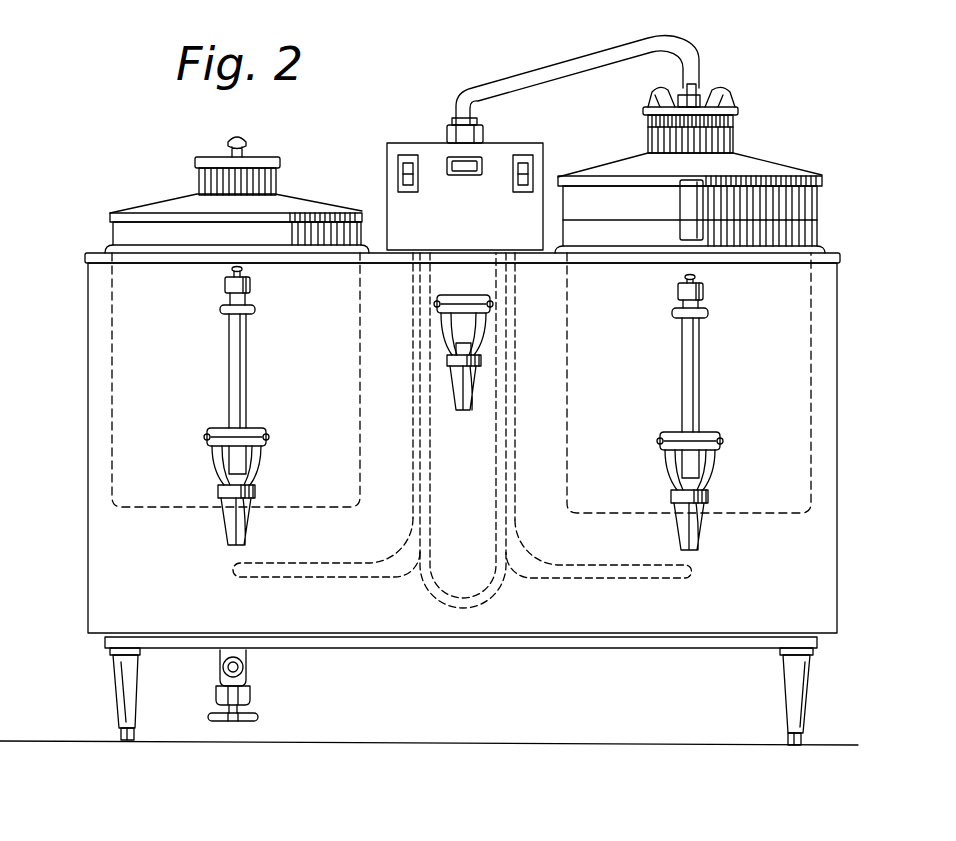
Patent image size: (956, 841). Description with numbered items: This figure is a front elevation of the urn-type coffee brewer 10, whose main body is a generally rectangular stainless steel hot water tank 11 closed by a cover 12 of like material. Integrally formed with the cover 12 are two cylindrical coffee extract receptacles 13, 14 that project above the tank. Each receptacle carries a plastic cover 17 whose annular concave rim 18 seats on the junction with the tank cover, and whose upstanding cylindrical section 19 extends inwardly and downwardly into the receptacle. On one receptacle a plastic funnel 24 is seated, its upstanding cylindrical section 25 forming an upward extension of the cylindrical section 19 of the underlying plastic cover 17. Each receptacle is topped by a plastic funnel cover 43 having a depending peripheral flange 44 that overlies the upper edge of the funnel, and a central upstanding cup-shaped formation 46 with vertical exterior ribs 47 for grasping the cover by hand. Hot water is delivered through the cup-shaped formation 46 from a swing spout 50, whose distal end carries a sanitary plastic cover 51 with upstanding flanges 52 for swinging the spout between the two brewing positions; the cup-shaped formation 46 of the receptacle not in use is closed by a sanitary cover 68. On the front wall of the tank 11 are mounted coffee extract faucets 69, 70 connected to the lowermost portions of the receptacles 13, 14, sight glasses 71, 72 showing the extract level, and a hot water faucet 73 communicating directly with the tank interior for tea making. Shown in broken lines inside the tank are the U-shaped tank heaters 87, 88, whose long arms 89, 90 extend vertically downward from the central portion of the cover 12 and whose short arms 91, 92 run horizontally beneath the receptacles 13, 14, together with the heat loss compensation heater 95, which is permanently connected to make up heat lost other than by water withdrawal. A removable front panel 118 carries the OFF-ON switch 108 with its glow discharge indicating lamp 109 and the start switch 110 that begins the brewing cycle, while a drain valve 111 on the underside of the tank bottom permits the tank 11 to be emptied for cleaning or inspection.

The urn-type coffee brewer 10 is at (118, 168).
The hot water tank 11 is at (838, 557).
The cover 12 is at (100, 247).
The coffee extract receptacle 13 is at (112, 400).
The coffee extract receptacle 14 is at (815, 430).
The plastic cover 17 is at (106, 228).
The annular concave rim 18 is at (170, 252).
The upstanding cylindrical section 19 is at (363, 222).
The plastic funnel 24 is at (826, 207).
The upstanding cylindrical section 25 is at (590, 200).
The plastic funnel cover 43 is at (330, 200).
The depending peripheral flange 44 is at (110, 212).
The cup-shaped formation 46 is at (280, 167).
The vertical exterior ribs 47 is at (278, 186).
The swing spout 50 is at (545, 66).
The sanitary plastic cover 51 is at (655, 97).
The upstanding flanges 52 is at (722, 95).
The sanitary cover 68 is at (212, 153).
The coffee extract faucet 69 is at (253, 492).
The coffee extract faucet 70 is at (710, 496).
The sight glass 71 is at (243, 362).
The sight glass 72 is at (700, 385).
The hot water faucet 73 is at (481, 355).
The tank heater 87 is at (405, 433).
The tank heater 88 is at (513, 462).
The long arm 89 is at (412, 388).
The long arm 90 is at (515, 395).
The short arm 91 is at (313, 565).
The short arm 92 is at (641, 566).
The heat loss compensation heater 95 is at (430, 573).
The OFF-ON switch 108 is at (418, 160).
The glow discharge indicating lamp 109 is at (466, 172).
The start switch 110 is at (521, 160).
The drain valve 111 is at (255, 672).
The front panel 118 is at (515, 233).